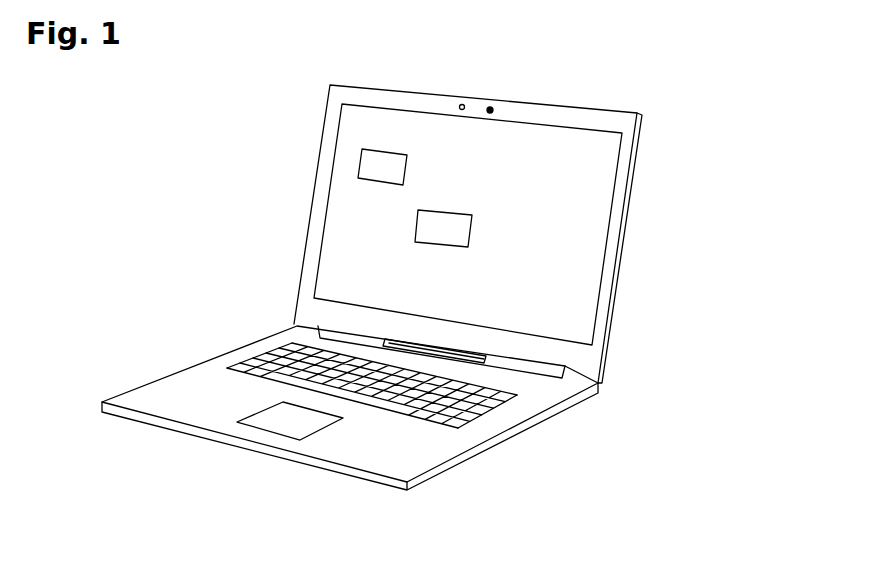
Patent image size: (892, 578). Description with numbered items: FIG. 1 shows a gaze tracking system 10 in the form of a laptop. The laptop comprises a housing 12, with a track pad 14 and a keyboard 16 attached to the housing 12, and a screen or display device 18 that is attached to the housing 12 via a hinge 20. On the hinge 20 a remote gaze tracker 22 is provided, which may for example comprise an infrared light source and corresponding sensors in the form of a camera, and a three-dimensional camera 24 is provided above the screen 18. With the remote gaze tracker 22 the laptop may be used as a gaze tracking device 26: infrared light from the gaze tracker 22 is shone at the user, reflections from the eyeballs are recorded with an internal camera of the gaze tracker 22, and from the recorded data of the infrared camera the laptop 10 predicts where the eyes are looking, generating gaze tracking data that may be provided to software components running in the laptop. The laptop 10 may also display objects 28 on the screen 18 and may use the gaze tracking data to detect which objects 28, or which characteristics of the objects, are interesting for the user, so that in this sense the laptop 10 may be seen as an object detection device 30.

The gaze tracking system 10 is at (147, 164).
The housing 12 is at (400, 448).
The track pad 14 is at (290, 423).
The keyboard 16 is at (263, 363).
The screen or display device 18 is at (580, 282).
The hinge 20 is at (334, 332).
The remote gaze tracker 22 is at (477, 352).
The 3D camera 24 is at (490, 108).
The gaze tracking device 26 is at (704, 155).
The objects 28 is at (369, 165).
The object detection device 30 is at (188, 302).